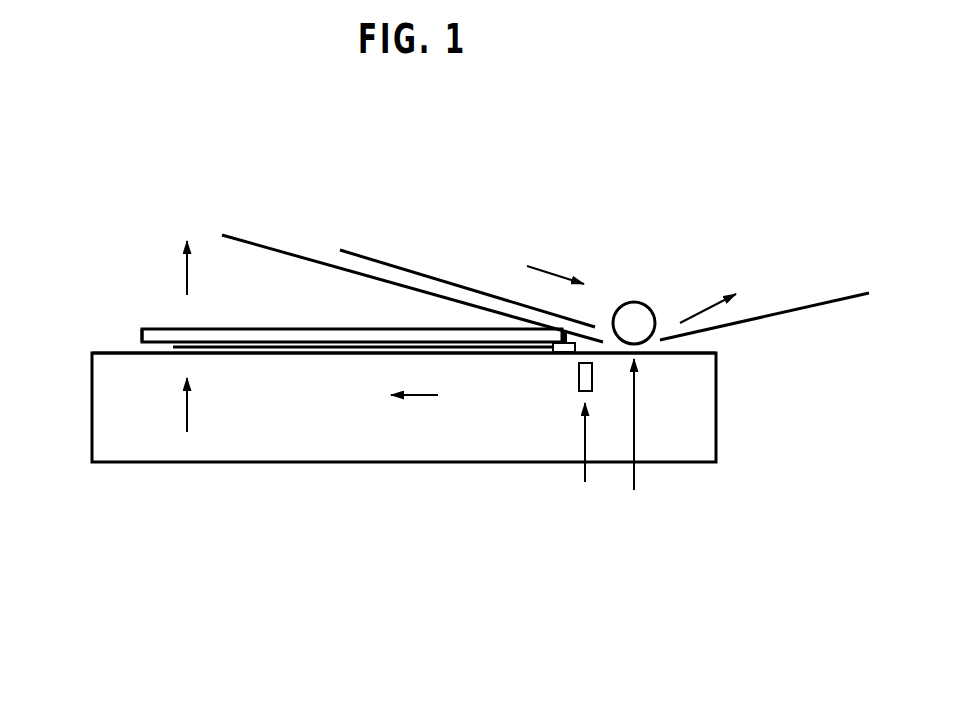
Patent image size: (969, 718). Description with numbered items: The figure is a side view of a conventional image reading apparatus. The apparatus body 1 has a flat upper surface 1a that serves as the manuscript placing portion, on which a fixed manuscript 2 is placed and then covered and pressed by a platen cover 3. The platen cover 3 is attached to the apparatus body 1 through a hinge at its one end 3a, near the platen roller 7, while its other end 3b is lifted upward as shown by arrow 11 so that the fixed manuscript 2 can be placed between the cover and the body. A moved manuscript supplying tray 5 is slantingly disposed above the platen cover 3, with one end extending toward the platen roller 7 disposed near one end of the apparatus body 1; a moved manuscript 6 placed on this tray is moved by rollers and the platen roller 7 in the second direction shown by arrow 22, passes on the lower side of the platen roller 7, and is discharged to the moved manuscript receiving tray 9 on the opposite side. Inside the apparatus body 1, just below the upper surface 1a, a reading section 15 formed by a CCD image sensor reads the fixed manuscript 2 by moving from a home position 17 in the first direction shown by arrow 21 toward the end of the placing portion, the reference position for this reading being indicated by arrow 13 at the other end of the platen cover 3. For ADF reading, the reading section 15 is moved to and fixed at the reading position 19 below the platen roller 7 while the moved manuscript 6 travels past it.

The apparatus body 1 is at (100, 405).
The upper surface 1a is at (273, 355).
The fixed manuscript 2 is at (350, 350).
The platen cover 3 is at (260, 331).
The one end of platen cover 3a is at (552, 354).
The other end of platen cover 3b is at (155, 333).
The moved manuscript supplying tray 5 is at (260, 246).
The moved manuscript 6 is at (375, 261).
The platen roller 7 is at (628, 303).
The moved manuscript receiving tray 9 is at (820, 304).
The arrow 11 is at (187, 262).
The arrow 13 is at (187, 425).
The reading section 15 is at (579, 380).
The home position 17 is at (585, 436).
The reading position 19 is at (634, 436).
The arrow 21 is at (425, 397).
The arrow 22 is at (543, 268).